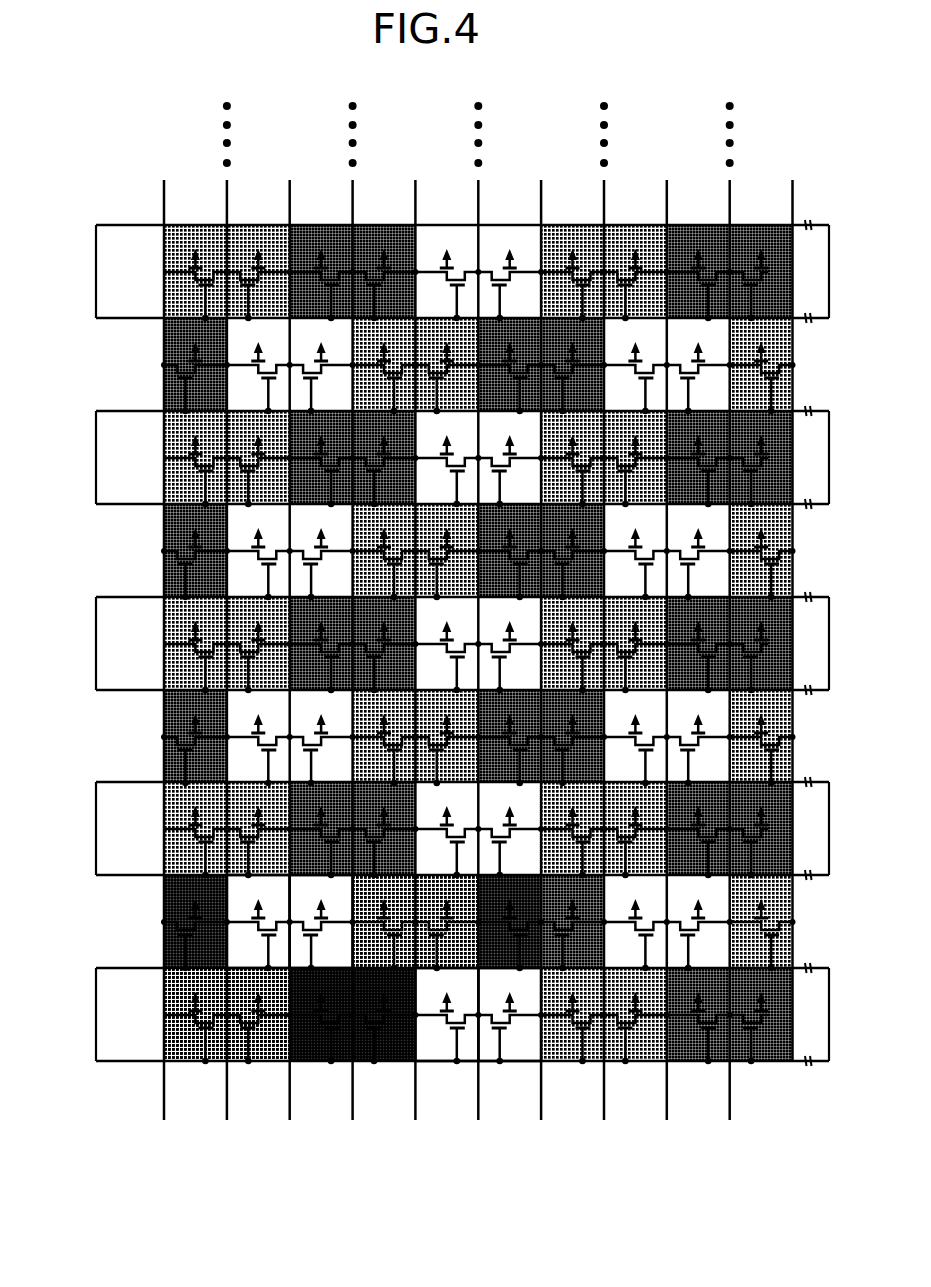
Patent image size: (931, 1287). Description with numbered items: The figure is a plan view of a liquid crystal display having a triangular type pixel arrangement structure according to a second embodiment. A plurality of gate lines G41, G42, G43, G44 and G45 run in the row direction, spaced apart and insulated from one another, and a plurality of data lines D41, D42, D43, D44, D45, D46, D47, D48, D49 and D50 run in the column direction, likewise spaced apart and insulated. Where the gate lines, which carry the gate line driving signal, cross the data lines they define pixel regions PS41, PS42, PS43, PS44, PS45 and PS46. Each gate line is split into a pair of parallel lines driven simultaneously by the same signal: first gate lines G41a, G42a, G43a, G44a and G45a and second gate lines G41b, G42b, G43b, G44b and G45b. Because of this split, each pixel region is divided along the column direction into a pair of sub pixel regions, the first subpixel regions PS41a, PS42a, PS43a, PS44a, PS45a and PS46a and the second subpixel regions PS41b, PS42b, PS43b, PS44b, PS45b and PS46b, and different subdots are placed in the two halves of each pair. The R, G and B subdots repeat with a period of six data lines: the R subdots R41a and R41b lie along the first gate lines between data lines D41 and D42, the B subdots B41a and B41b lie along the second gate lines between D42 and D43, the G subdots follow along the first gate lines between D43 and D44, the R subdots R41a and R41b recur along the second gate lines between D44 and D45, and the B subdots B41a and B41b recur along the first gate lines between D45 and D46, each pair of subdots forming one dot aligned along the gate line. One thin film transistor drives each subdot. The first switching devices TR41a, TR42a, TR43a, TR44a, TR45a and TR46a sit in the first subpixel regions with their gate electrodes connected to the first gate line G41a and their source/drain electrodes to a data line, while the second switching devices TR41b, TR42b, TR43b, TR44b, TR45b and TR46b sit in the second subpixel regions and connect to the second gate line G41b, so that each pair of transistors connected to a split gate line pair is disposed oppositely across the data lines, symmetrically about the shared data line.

The gate line G45 is at (96, 272).
The gate line G44 is at (96, 458).
The gate line G43 is at (96, 644).
The gate line G42 is at (96, 829).
The gate line G41 is at (96, 1015).
The second gate line G45b is at (462, 204).
The first gate line G45a is at (462, 297).
The second gate line G44b is at (462, 390).
The first gate line G44a is at (462, 483).
The second gate line G43b is at (462, 576).
The first gate line G43a is at (462, 669).
The second gate line G42b is at (462, 761).
The first gate line G42a is at (462, 854).
The second gate line G41b is at (462, 968).
The first gate line G41a is at (462, 970).
The data line D41 is at (166, 669).
The data line D42 is at (226, 630).
The data line D43 is at (293, 669).
The data line D44 is at (358, 630).
The data line D45 is at (420, 669).
The data line D46 is at (485, 630).
The data line D47 is at (543, 669).
The data line D48 is at (607, 630).
The data line D49 is at (672, 669).
The data line D50 is at (737, 630).
The pixel region PS41 is at (195, 1040).
The pixel region PS42 is at (258, 1040).
The pixel region PS43 is at (321, 1040).
The pixel region PS44 is at (384, 1040).
The pixel region PS45 is at (446, 1040).
The pixel region PS46 is at (509, 1040).
The first subpixel region PS41a is at (195, 1014).
The first subpixel region PS42a is at (258, 1014).
The first subpixel region PS43a is at (321, 1014).
The first subpixel region PS44a is at (384, 1014).
The first subpixel region PS45a is at (446, 1014).
The first subpixel region PS46a is at (509, 1014).
The second subpixel region PS41b is at (195, 921).
The second subpixel region PS42b is at (258, 921).
The second subpixel region PS43b is at (321, 921).
The second subpixel region PS44b is at (384, 921).
The second subpixel region PS45b is at (446, 921).
The second subpixel region PS46b is at (509, 921).
The first switching device TR41a is at (198, 1028).
The first switching device TR42a is at (261, 1028).
The first switching device TR43a is at (323, 1028).
The first switching device TR44a is at (386, 1028).
The first switching device TR45a is at (449, 1028).
The first switching device TR46a is at (512, 1028).
The second switching device TR41b is at (198, 935).
The second switching device TR42b is at (261, 935).
The second switching device TR43b is at (323, 935).
The second switching device TR44b is at (386, 935).
The second switching device TR45b is at (449, 935).
The second switching device TR46b is at (512, 935).
The R subdot R41a is at (284, 968).
The R subdot R41b is at (355, 968).
The B subdot B41a is at (347, 968).
The B subdot B41b is at (422, 968).